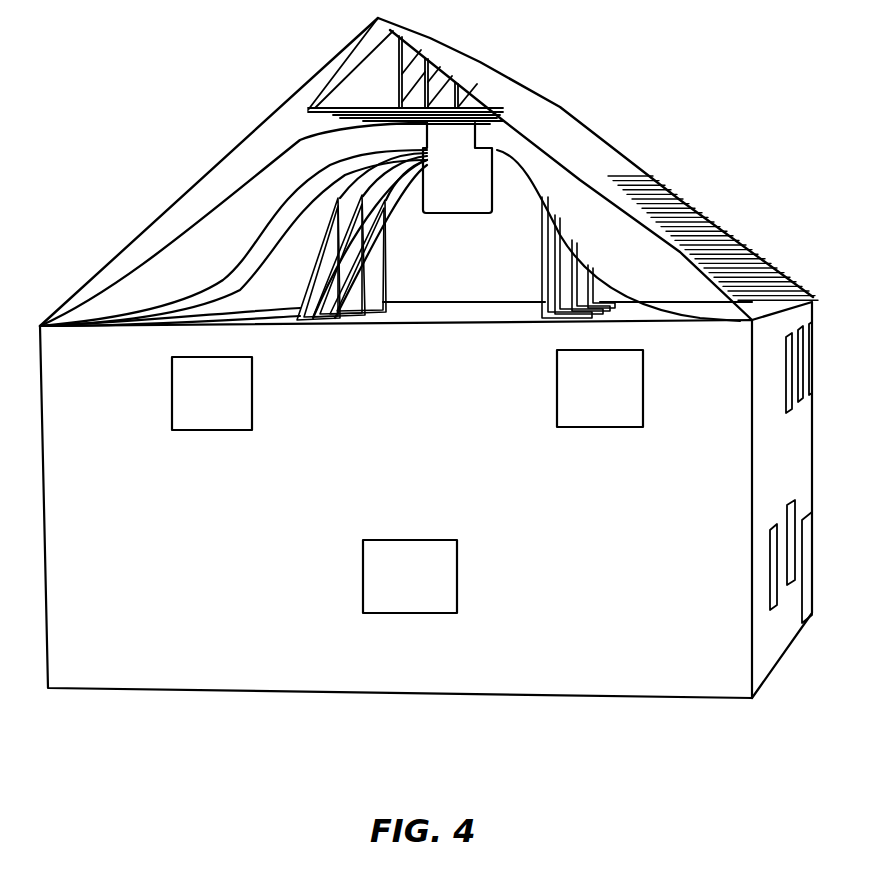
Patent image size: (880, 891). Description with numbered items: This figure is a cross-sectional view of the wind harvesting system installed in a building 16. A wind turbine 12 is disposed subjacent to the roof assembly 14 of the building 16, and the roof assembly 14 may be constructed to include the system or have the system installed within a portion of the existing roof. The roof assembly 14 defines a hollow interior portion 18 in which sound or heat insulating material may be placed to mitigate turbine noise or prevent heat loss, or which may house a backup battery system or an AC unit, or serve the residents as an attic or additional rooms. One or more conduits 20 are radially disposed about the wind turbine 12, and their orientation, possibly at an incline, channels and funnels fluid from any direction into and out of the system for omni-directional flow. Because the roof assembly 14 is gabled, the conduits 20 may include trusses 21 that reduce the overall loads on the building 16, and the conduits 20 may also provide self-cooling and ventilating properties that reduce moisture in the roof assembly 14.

The roof assembly 14 is at (250, 95).
The wind turbine 12 is at (470, 106).
The hollow interior portion 18 is at (455, 248).
The trusses 21 is at (322, 325).
The conduits 20 is at (677, 287).
The building 16 is at (782, 627).